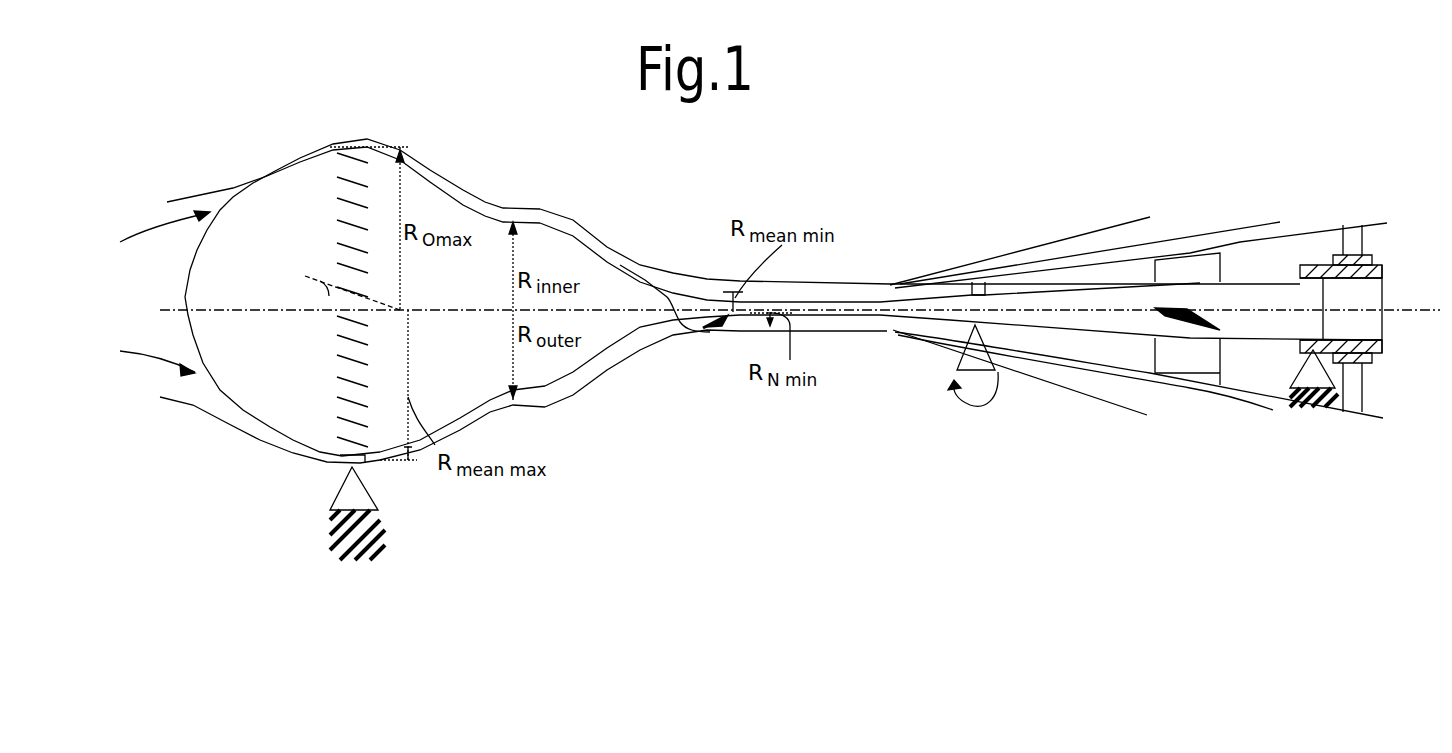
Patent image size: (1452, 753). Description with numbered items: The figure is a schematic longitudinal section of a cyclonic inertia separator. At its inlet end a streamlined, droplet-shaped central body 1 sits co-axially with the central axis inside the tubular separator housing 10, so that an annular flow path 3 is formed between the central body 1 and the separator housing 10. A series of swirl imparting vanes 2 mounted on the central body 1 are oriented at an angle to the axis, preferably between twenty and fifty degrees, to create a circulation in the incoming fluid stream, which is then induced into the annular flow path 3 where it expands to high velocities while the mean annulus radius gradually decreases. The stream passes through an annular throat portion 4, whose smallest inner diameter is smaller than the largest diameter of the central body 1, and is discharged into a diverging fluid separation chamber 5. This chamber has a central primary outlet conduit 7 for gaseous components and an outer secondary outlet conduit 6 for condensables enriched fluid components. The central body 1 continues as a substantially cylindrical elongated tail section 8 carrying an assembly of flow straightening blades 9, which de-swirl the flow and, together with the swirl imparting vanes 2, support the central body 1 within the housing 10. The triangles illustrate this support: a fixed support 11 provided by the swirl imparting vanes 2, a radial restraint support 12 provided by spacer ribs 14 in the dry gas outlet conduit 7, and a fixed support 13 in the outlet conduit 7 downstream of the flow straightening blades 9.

The central body 1 is at (258, 215).
The swirl imparting vanes 2 is at (353, 319).
The annular flow path 3 is at (453, 180).
The annular throat portion 4 is at (710, 290).
The fluid separation chamber 5 is at (892, 332).
The secondary outlet conduit 6 is at (1070, 252).
The primary outlet conduit 7 is at (1133, 353).
The tail section 8 is at (958, 305).
The flow straightening blades 9 is at (1200, 268).
The separator housing 10 is at (652, 262).
The fixed support 11 is at (360, 490).
The radial restraint support 12 is at (960, 370).
The fixed support 13 is at (1313, 378).
The spacer ribs 14 is at (990, 275).